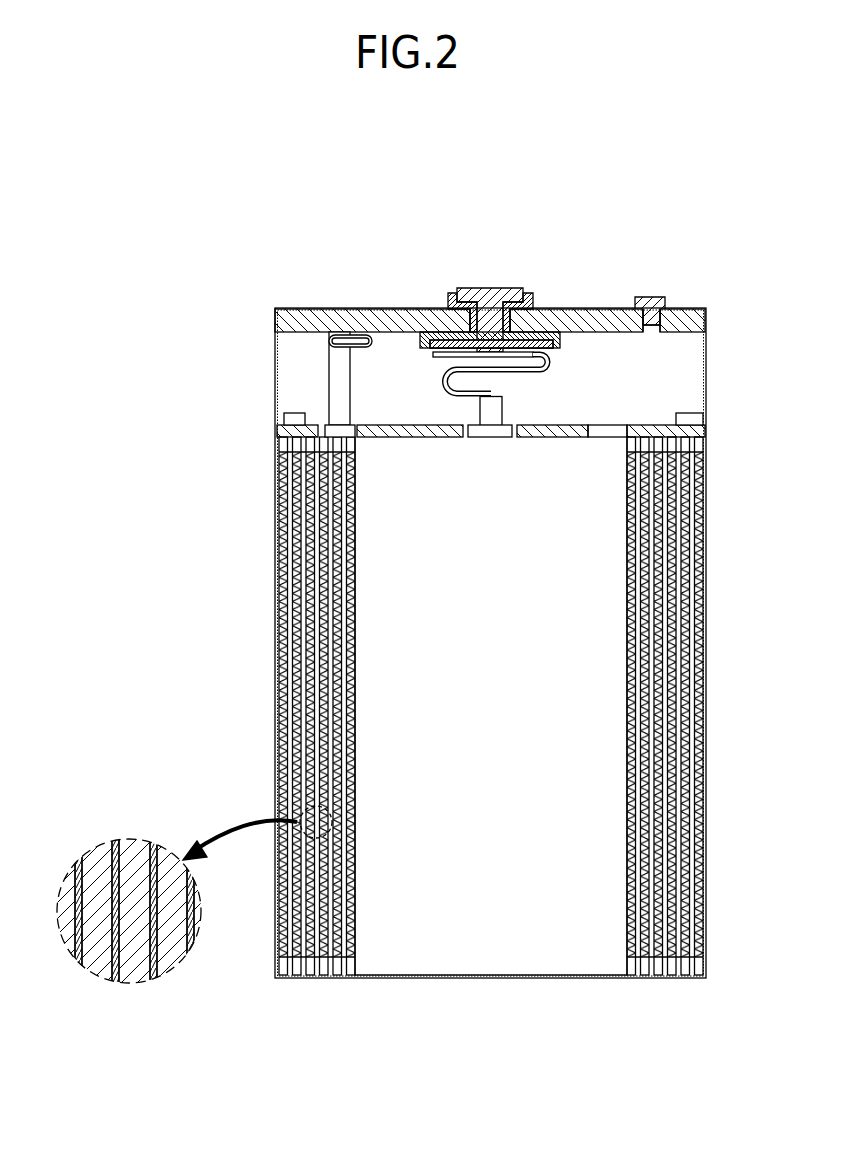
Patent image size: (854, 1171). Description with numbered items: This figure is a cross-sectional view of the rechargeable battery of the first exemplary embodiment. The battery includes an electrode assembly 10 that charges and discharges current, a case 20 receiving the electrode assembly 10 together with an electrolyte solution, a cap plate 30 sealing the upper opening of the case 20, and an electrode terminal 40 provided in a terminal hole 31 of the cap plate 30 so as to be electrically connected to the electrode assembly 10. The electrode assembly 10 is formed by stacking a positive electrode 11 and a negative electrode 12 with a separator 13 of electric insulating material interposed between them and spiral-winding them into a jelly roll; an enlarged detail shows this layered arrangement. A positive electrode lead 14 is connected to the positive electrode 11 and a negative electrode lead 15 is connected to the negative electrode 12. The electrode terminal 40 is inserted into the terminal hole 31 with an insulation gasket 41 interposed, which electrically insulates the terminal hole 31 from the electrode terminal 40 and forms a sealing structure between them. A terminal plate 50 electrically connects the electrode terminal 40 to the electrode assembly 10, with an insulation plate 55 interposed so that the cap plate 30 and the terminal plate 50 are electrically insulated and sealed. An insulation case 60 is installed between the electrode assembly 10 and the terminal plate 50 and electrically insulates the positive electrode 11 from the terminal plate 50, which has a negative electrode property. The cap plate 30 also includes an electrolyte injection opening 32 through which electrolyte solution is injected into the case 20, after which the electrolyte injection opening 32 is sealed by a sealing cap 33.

The electrode assembly 10 is at (290, 657).
The positive electrode 11 is at (136, 967).
The negative electrode 12 is at (173, 955).
The separator 13 is at (154, 840).
The positive electrode lead 14 is at (337, 377).
The negative electrode lead 15 is at (551, 373).
The case 20 is at (708, 826).
The cap plate 30 is at (330, 316).
The terminal hole 31 is at (462, 294).
The electrolyte injection opening 32 is at (652, 328).
The sealing cap 33 is at (647, 300).
The electrode terminal 40 is at (492, 298).
The insulation gasket 41 is at (447, 300).
The terminal plate 50 is at (548, 355).
The insulation plate 55 is at (552, 338).
The insulation case 60 is at (697, 430).